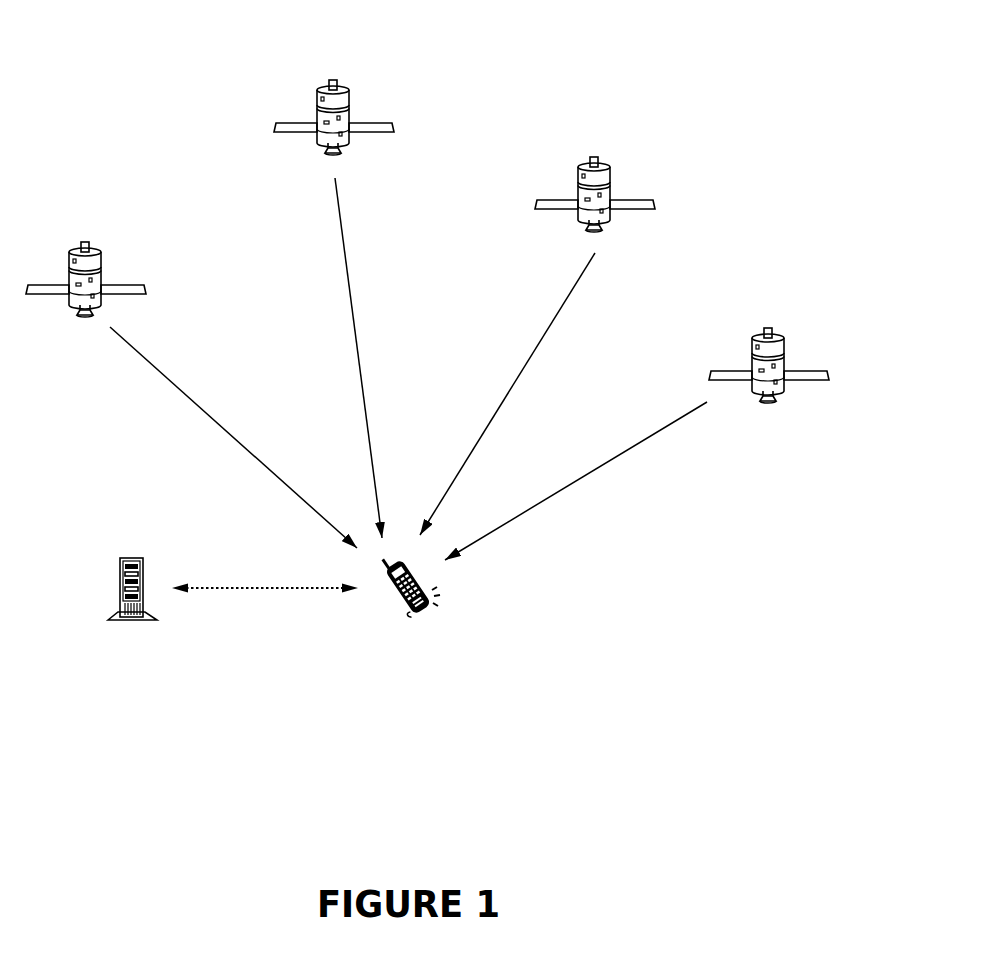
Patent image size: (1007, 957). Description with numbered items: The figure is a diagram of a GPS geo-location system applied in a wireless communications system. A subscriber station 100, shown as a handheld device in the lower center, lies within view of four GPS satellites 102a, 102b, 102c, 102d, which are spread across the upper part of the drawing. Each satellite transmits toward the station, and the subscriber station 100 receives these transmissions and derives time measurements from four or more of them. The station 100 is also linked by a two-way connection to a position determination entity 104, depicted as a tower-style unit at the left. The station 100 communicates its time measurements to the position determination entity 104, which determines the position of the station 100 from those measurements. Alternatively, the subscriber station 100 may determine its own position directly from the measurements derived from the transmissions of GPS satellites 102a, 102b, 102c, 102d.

The subscriber station 100 is at (405, 615).
The GPS satellite 102a is at (85, 242).
The GPS satellite 102b is at (333, 80).
The GPS satellite 102c is at (594, 157).
The GPS satellite 102d is at (768, 328).
The position determination entity 104 is at (128, 557).